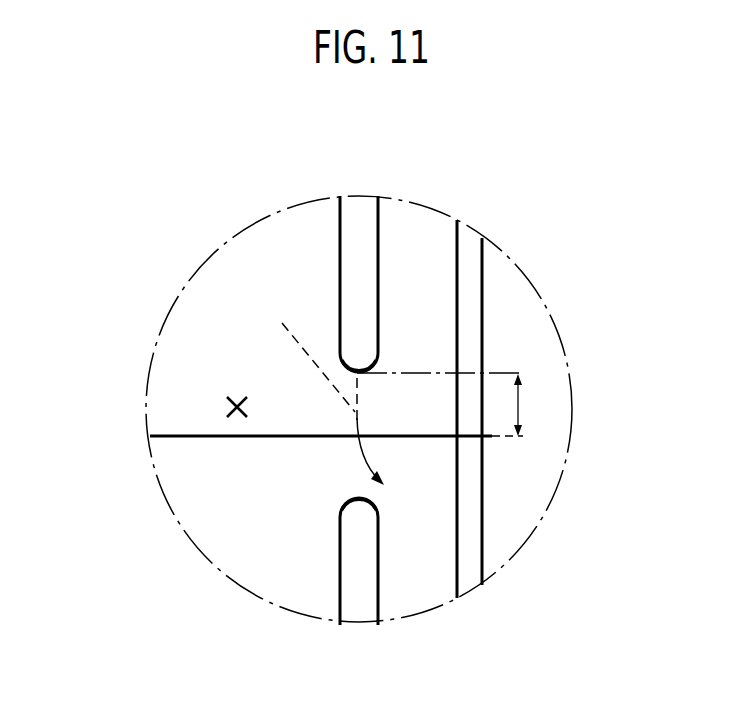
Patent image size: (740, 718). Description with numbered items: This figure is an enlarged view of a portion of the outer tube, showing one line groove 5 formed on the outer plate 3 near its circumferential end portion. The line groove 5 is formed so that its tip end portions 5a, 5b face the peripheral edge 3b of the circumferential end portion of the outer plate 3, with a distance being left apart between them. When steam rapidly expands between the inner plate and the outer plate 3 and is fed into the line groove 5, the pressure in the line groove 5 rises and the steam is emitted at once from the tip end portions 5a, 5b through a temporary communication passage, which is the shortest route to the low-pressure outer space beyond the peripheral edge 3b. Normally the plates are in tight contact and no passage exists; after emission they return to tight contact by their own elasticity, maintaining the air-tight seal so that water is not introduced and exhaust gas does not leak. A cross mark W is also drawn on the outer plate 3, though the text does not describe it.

The outer plate 3 is at (257, 262).
The peripheral edge 3b is at (227, 437).
The line groove 5 is at (355, 220).
The tip end portion 5a is at (352, 372).
The tip end portion 5b is at (352, 500).
The workpiece mark W is at (232, 402).